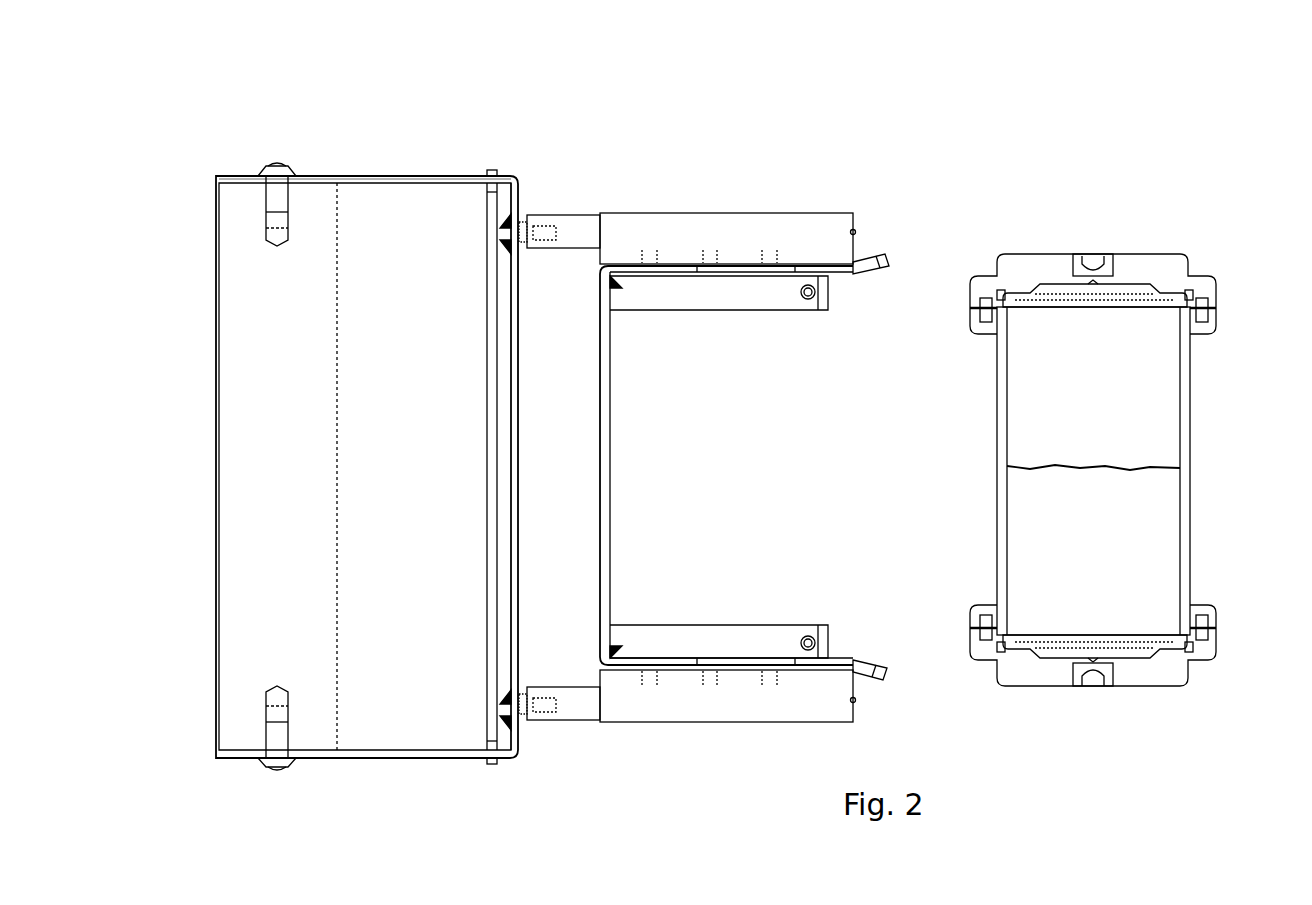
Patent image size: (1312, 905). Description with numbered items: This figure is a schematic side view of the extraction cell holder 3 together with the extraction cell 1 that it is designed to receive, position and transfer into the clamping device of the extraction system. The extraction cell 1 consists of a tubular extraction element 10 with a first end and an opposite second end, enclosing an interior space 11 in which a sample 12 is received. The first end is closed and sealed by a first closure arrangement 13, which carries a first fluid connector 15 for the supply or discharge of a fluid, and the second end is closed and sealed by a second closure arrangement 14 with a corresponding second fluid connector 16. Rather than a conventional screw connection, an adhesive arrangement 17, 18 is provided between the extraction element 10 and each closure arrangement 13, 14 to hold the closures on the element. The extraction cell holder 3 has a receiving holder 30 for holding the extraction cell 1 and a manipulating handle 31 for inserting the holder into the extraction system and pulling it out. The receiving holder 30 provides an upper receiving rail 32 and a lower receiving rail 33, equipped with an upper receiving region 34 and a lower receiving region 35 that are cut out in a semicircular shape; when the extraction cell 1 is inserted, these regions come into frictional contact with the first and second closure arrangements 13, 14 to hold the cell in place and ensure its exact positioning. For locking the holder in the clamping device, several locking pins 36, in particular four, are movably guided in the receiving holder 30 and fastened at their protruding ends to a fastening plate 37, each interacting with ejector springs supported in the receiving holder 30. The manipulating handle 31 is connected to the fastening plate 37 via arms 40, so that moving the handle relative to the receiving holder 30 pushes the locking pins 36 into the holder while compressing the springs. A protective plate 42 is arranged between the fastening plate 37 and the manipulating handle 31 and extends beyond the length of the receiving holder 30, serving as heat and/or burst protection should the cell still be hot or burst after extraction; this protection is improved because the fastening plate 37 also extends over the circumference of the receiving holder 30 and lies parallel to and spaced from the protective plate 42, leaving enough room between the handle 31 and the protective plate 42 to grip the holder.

The extraction cell 1 is at (1063, 150).
The extraction cell holder 3 is at (567, 140).
The tubular extraction element 10 is at (1190, 388).
The interior space 11 is at (1160, 419).
The sample 12 is at (1122, 521).
The first closure arrangement 13 is at (1093, 243).
The second closure arrangement 14 is at (1103, 683).
The first fluid connector 15 is at (1097, 255).
The second fluid connector 16 is at (1097, 687).
The adhesive arrangement 17 is at (1205, 298).
The adhesive arrangement 18 is at (1205, 620).
The receiving holder 30 is at (751, 185).
The manipulating handle 31 is at (239, 367).
The upper receiving rail 32 is at (843, 272).
The lower receiving rail 33 is at (843, 662).
The upper receiving region 34 is at (712, 300).
The lower receiving region 35 is at (707, 638).
The locking pin 36 is at (567, 233).
The fastening plate 37 is at (514, 392).
The arm 40 is at (350, 176).
The protective plate 42 is at (487, 448).